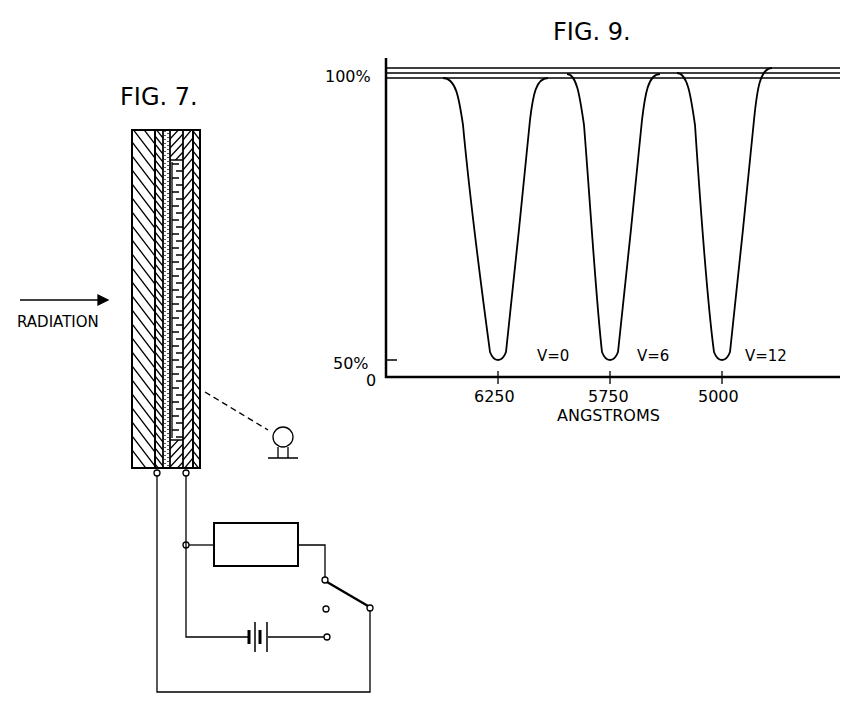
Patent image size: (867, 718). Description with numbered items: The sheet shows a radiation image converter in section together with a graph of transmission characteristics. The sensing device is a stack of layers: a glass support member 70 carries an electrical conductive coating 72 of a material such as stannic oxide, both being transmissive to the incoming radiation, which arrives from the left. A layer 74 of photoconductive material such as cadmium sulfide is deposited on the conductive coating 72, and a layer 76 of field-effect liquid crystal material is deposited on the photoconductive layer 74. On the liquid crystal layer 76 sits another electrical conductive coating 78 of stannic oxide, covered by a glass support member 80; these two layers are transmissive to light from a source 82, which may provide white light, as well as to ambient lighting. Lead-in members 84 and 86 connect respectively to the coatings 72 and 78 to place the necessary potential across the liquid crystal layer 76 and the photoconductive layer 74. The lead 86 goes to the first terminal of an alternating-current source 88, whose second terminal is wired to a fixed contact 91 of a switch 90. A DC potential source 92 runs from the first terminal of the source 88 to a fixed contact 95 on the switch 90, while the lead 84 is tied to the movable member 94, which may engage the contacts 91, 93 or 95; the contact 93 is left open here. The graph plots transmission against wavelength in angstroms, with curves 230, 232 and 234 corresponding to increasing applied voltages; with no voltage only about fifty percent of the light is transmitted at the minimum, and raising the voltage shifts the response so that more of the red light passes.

In FIG. 7, the glass support member 70 is at (142, 172).
In FIG. 7, the electrical conductive coating 72 is at (160, 203).
In FIG. 7, the photoconductive layer 74 is at (168, 231).
In FIG. 7, the liquid crystal layer 76 is at (184, 233).
In FIG. 7, the electrical conductive coating 78 is at (190, 197).
In FIG. 7, the support member 80 is at (197, 264).
In FIG. 7, the light source 82 is at (268, 441).
In FIG. 7, the lead-in member 84 is at (157, 586).
In FIG. 7, the lead-in member 86 is at (186, 491).
In FIG. 7, the alternating-current source 88 is at (276, 523).
In FIG. 7, the switch 90 is at (366, 636).
In FIG. 7, the fixed contact 91 is at (329, 579).
In FIG. 7, the DC potential source 92 is at (266, 626).
In FIG. 7, the contact 93 is at (323, 609).
In FIG. 7, the movable member 94 is at (372, 605).
In FIG. 7, the fixed contact 95 is at (325, 641).
In FIG. 9, the transmission curve 230 is at (468, 226).
In FIG. 9, the transmission curve 232 is at (580, 216).
In FIG. 9, the transmission curve 234 is at (692, 216).